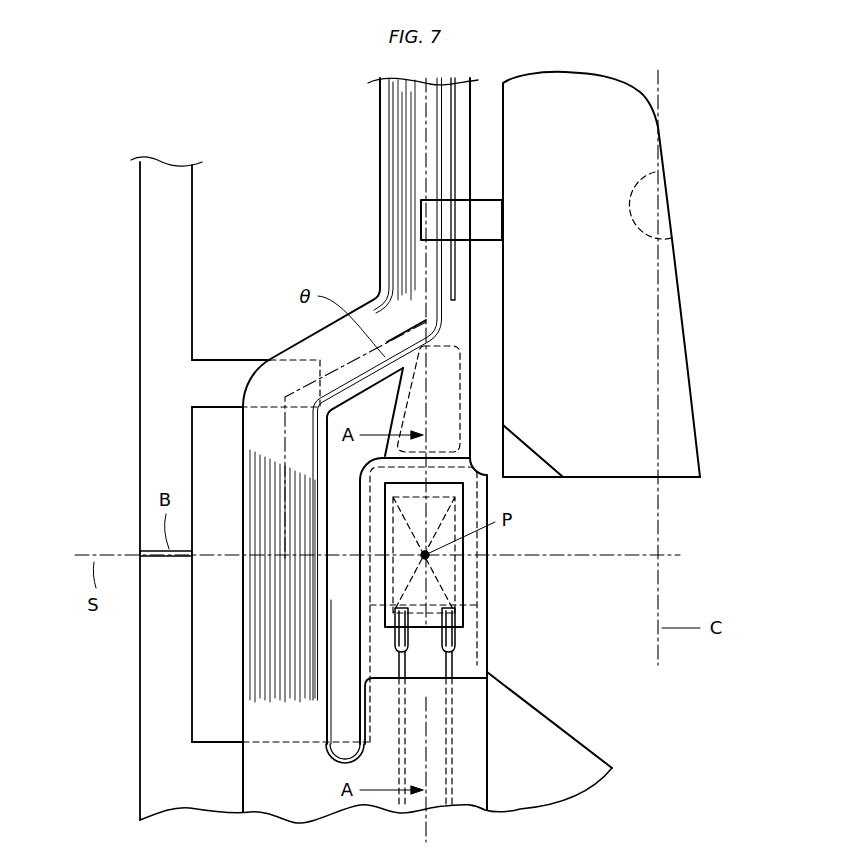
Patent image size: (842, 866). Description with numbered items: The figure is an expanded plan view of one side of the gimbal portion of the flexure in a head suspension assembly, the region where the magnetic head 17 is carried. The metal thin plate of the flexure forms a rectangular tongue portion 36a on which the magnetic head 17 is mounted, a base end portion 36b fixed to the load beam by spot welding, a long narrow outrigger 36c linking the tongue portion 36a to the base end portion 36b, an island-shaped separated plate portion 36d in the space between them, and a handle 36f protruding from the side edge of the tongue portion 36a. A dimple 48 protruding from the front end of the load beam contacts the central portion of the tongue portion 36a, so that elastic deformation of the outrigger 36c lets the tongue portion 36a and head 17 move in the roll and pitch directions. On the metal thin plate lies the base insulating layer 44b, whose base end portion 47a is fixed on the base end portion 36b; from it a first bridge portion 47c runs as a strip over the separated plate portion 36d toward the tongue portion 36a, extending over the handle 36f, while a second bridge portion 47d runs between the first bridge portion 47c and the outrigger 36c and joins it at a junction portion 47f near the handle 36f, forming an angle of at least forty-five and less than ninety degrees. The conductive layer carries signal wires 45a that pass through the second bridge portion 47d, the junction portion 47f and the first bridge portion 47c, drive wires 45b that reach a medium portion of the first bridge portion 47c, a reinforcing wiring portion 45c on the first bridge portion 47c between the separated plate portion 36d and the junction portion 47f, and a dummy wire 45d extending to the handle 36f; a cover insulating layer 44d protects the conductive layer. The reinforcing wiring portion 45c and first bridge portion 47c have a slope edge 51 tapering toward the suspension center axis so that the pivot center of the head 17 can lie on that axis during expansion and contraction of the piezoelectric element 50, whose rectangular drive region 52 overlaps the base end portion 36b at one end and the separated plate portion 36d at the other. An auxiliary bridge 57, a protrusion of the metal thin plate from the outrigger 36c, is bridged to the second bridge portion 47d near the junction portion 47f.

The magnetic head 17 is at (695, 378).
The tongue portion 36a is at (620, 478).
The base end portion 36b is at (560, 736).
The outrigger 36c is at (150, 318).
The separated plate portion 36d is at (480, 492).
The handle 36f is at (480, 212).
The base insulating layer 44b is at (489, 628).
The cover insulating layer 44d is at (472, 700).
The signal wire 45a is at (440, 138).
The drive wire 45b is at (407, 738).
The reinforcing wiring portion 45c is at (447, 408).
The dummy wire 45d is at (457, 118).
The base end portion 47a is at (489, 657).
The first bridge portion 47c is at (380, 170).
The second bridge portion 47d is at (326, 616).
The junction portion 47f is at (397, 301).
The dimple 48 is at (652, 172).
The piezoelectric element 50 is at (465, 540).
The slope edge 51 is at (398, 416).
The drive region 52 is at (342, 547).
The auxiliary bridge 57 is at (230, 366).